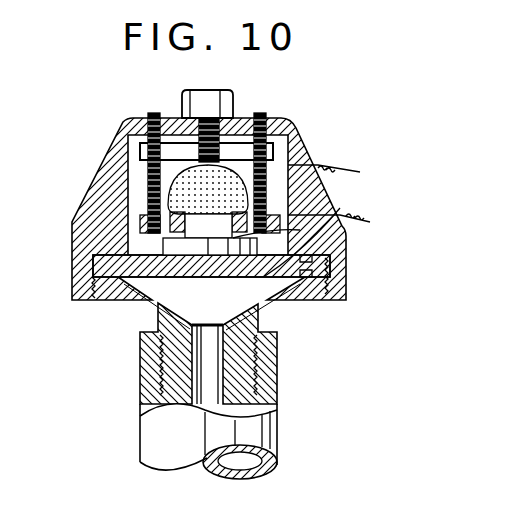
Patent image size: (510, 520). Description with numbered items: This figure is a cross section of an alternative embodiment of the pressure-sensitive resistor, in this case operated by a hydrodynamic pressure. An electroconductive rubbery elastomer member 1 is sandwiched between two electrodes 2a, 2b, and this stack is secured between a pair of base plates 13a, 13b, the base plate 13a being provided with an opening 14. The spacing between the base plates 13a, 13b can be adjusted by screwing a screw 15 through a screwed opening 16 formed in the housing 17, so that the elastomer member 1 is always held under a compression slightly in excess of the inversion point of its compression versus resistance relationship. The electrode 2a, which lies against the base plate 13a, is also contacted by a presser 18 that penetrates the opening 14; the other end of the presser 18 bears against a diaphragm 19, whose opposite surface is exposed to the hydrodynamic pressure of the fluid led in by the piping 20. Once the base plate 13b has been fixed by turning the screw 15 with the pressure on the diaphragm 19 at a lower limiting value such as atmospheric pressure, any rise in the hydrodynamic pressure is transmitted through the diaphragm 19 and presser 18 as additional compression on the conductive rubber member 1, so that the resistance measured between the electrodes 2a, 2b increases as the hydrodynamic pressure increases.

The electroconductive rubbery elastomer member 1 is at (302, 190).
The electrode 2a is at (166, 193).
The electrode 2b is at (150, 166).
The base plate 13a is at (290, 225).
The base plate 13b is at (268, 140).
The opening 14 is at (158, 240).
The screw 15 is at (190, 104).
The screwed opening 16 is at (186, 124).
The housing 17 is at (303, 152).
The presser 18 is at (345, 273).
The diaphragm 19 is at (281, 294).
The piping 20 is at (158, 440).